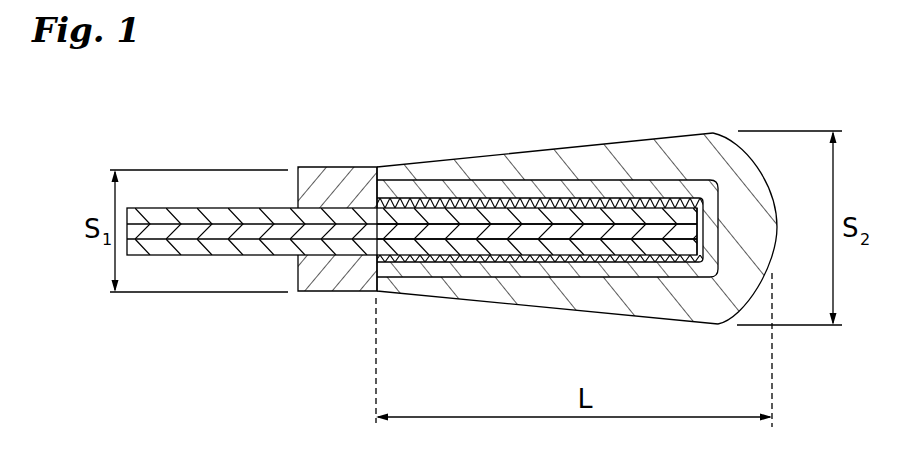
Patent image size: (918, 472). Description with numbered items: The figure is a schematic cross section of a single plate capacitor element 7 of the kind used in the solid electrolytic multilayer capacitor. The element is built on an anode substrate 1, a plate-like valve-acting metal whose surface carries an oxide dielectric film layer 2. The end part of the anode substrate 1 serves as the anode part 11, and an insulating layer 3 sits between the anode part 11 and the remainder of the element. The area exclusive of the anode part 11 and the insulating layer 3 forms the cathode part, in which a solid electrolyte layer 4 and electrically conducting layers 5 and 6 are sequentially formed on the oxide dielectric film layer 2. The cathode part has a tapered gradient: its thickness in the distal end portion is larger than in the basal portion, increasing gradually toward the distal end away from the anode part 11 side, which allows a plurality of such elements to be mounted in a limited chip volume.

The anode substrate 1 is at (212, 238).
The oxide dielectric film layer 2 is at (445, 245).
The insulating layer 3 is at (347, 183).
The solid electrolyte layer 4 is at (670, 277).
The electrically conducting layer 5 is at (612, 263).
The electrically conducting layer 6 is at (695, 158).
The single plate capacitor element 7 is at (579, 131).
The anode part 11 is at (233, 207).